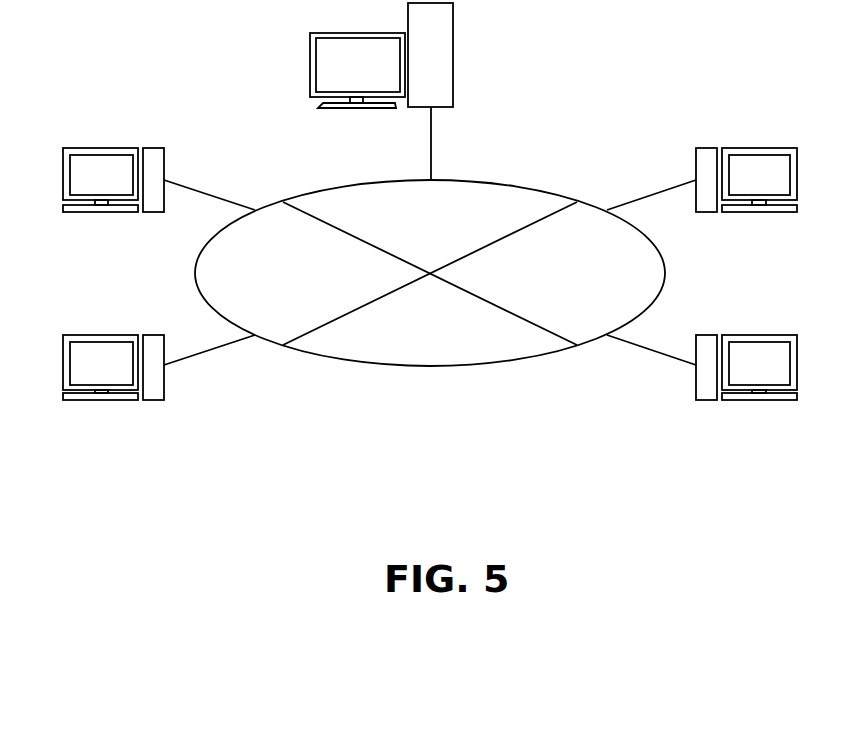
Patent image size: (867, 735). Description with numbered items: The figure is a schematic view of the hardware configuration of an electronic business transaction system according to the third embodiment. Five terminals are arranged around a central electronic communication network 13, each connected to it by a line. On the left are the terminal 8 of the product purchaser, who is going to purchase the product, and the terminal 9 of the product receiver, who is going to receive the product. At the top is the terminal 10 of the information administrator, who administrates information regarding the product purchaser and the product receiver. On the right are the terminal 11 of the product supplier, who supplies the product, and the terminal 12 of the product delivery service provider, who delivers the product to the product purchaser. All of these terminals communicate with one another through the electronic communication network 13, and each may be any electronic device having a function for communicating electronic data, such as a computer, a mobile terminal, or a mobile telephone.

The terminal of the product purchaser 8 is at (153, 147).
The terminal of the product receiver 9 is at (152, 402).
The terminal of the information administrator 10 is at (457, 56).
The terminal of the product supplier 11 is at (708, 147).
The terminal of the product delivery service provider 12 is at (708, 402).
The electronic communication network 13 is at (431, 370).